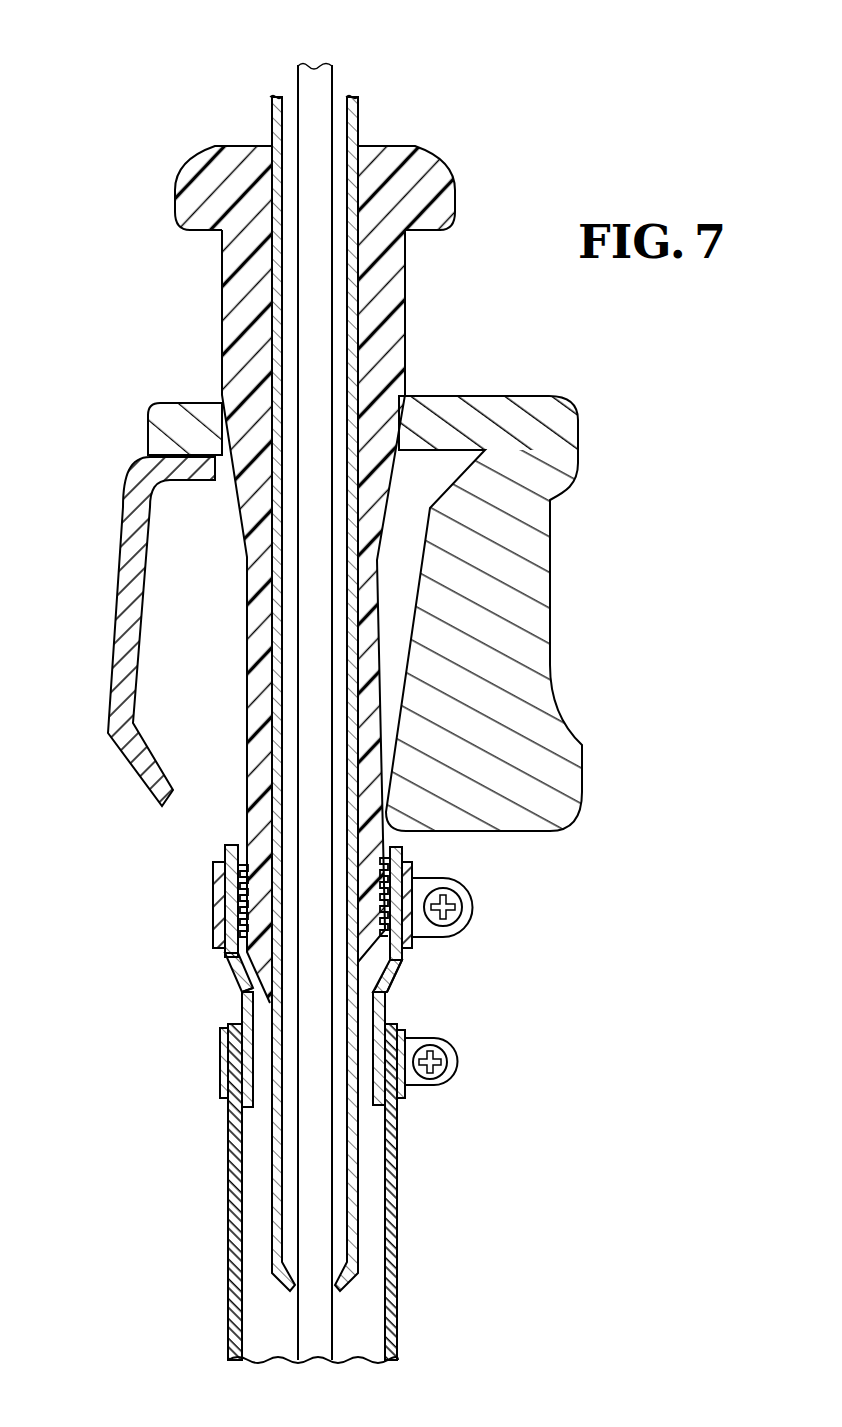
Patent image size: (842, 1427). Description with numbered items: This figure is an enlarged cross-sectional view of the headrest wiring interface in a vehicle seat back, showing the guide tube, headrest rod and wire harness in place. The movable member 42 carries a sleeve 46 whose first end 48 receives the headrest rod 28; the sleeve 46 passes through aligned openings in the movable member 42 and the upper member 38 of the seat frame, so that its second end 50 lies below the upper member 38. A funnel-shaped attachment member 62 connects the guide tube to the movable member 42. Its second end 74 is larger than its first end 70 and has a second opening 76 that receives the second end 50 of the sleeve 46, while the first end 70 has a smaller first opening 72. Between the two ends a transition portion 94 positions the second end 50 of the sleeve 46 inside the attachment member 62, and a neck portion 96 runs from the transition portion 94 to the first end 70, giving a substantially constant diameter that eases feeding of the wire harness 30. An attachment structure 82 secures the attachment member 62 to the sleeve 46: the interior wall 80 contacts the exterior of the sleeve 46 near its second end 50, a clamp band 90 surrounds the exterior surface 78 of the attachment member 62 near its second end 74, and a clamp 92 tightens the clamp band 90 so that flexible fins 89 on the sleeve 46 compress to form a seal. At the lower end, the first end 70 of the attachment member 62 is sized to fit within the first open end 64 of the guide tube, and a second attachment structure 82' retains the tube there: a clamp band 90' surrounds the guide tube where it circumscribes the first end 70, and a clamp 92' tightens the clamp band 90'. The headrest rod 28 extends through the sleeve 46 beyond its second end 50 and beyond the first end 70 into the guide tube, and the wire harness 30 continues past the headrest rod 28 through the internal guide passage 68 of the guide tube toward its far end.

The headrest rod 28 is at (290, 107).
The wire harness 30 is at (313, 78).
The upper member 38 is at (133, 592).
The movable member 42 is at (515, 628).
The sleeve 46 is at (250, 313).
The first end 48 is at (242, 146).
The second end 50 is at (366, 953).
The attachment member 62 is at (410, 977).
The first open end 64 is at (240, 1028).
The internal guide passage 68 is at (367, 1317).
The first end 70 is at (243, 1107).
The first opening 72 is at (262, 1102).
The second end 74 is at (225, 845).
The second opening 76 is at (243, 863).
The exterior surface 78 is at (245, 978).
The interior wall 80 is at (243, 985).
The attachment structure 82 is at (438, 901).
The attachment structure 82' is at (450, 1100).
The flexible fins 89 is at (213, 916).
The clamp band 90 is at (151, 904).
The clamp band 90' is at (457, 1064).
The clamp 92 is at (478, 907).
The clamp 92' is at (469, 1072).
The transition portion 94 is at (397, 983).
The neck portion 96 is at (228, 1050).